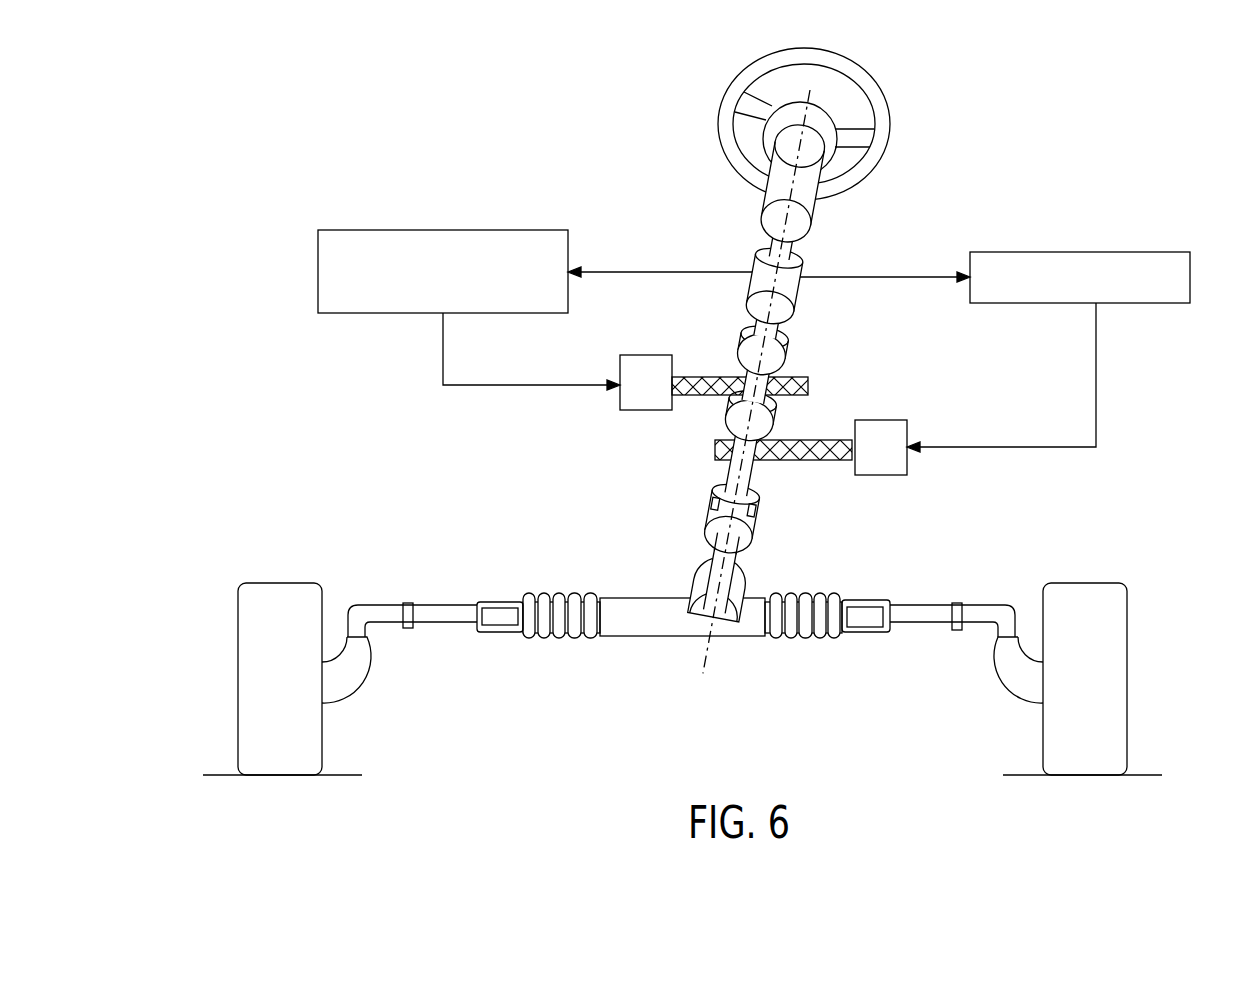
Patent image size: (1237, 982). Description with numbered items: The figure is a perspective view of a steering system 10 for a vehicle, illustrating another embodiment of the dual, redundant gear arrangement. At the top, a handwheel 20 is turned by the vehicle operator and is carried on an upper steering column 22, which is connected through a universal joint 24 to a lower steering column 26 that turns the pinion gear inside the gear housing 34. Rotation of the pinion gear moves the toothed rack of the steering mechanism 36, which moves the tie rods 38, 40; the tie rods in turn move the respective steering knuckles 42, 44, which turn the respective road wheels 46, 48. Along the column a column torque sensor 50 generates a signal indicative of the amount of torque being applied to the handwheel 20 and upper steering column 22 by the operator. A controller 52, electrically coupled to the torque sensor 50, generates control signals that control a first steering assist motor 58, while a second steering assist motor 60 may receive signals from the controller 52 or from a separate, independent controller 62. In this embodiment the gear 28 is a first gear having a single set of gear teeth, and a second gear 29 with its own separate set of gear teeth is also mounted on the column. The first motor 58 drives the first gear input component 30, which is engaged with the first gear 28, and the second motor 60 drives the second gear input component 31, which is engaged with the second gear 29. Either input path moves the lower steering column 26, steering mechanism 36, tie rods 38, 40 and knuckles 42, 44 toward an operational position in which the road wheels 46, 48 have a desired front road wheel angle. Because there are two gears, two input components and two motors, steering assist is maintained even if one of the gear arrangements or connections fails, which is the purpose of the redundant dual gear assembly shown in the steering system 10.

The steering system 10 is at (992, 144).
The handwheel 20 is at (860, 81).
The upper steering column 22 is at (791, 232).
The universal joint 24 is at (760, 510).
The lower steering column 26 is at (733, 558).
The gear 28 is at (745, 351).
The second gear 29 is at (732, 417).
The first gear input component 30 is at (802, 388).
The second gear input component 31 is at (836, 462).
The gear housing 34 is at (707, 578).
The steering mechanism 36 is at (789, 640).
The tie rod 38 is at (453, 615).
The tie rod 40 is at (920, 618).
The steering knuckle 42 is at (348, 677).
The steering knuckle 44 is at (1013, 673).
The road wheel 46 is at (275, 600).
The road wheel 48 is at (1095, 600).
The column torque sensor 50 is at (791, 272).
The controller 52 is at (480, 228).
The first steering assist motor 58 is at (635, 353).
The second steering assist motor 60 is at (880, 477).
The controller 62 is at (1088, 250).